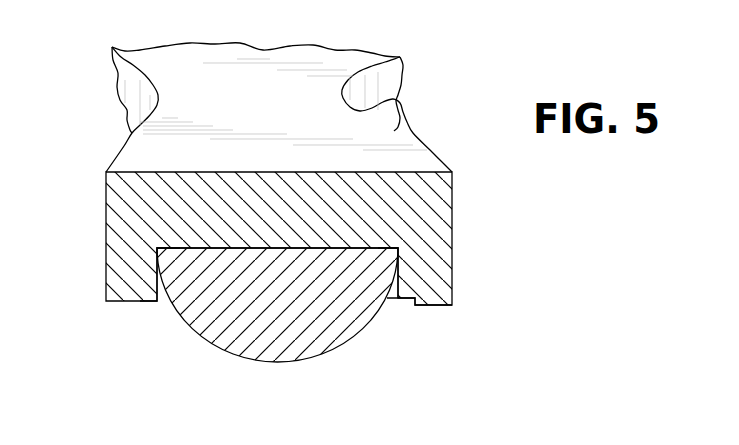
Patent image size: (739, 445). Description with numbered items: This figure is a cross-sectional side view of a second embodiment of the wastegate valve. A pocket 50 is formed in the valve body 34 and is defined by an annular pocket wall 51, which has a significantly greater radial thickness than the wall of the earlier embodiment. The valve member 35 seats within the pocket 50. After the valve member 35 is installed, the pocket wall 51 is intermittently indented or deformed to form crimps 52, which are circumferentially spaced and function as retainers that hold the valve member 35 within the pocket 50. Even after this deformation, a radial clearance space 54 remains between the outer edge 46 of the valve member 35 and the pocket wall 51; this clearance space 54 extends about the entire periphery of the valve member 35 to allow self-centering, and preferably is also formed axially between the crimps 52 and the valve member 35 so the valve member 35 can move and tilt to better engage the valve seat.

The valve body 34 is at (353, 146).
The valve member 35 is at (268, 338).
The outer edge 46 is at (157, 248).
The pocket 50 is at (378, 248).
The pocket wall 51 is at (452, 258).
The crimps 52 is at (397, 310).
The clearance space 54 is at (163, 303).